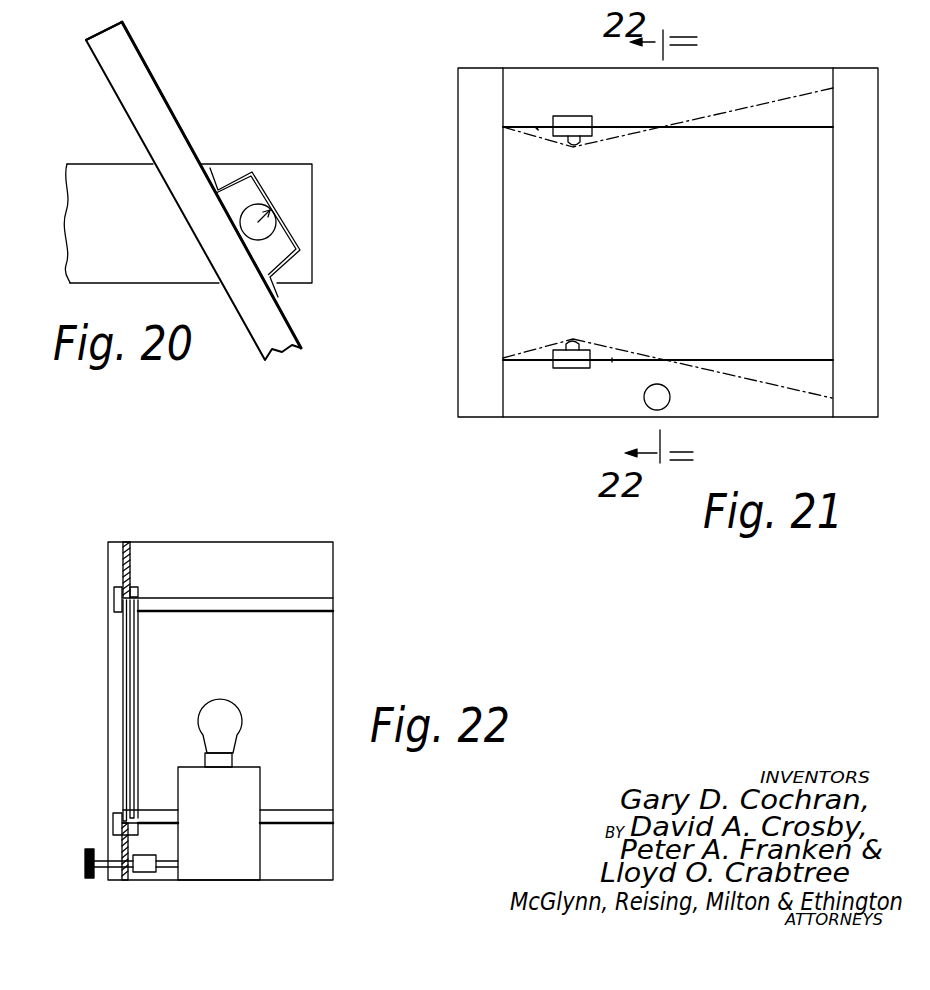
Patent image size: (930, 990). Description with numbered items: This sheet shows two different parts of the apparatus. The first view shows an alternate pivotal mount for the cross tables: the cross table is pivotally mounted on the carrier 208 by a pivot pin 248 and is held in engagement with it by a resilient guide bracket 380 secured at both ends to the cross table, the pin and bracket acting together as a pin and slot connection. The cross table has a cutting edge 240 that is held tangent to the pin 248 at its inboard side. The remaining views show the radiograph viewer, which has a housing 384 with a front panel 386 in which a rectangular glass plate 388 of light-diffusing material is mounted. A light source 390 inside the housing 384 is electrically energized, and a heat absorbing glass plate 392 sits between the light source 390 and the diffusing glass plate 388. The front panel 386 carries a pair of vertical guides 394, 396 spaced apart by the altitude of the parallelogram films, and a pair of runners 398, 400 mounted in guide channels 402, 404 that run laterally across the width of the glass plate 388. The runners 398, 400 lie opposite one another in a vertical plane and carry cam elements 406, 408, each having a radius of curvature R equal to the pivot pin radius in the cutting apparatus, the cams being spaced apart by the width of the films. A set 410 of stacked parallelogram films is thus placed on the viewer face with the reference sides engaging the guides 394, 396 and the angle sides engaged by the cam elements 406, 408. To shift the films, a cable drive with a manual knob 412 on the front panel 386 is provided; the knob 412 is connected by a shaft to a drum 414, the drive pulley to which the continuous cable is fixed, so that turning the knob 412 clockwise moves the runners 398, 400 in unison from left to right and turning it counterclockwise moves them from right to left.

In FIG. 20, the cutting edge 240 is at (175, 117).
In FIG. 20, the carrier 208 is at (78, 140).
In FIG. 20, the resilient guide bracket 380 is at (243, 178).
In FIG. 20, the pivot pin 248 is at (265, 218).
In FIG. 20, the radius of curvature R is at (299, 250).
In FIG. 21, the front panel 386 is at (705, 87).
In FIG. 21, the guide 394 is at (503, 79).
In FIG. 22, the guide 394 is at (108, 622).
In FIG. 21, the guide 396 is at (830, 78).
In FIG. 21, the runner 398 is at (577, 116).
In FIG. 21, the runner 400 is at (570, 368).
In FIG. 21, the guide channel 402 is at (537, 130).
In FIG. 21, the guide channel 404 is at (614, 356).
In FIG. 21, the cam element 406 is at (573, 147).
In FIG. 21, the cam element 408 is at (568, 338).
In FIG. 21, the set of parallelogram films 410 is at (768, 98).
In FIG. 21, the manual knob 412 is at (670, 402).
In FIG. 22, the manual knob 412 is at (85, 863).
In FIG. 22, the housing 384 is at (248, 542).
In FIG. 22, the glass plate 388 is at (123, 690).
In FIG. 22, the light source 390 is at (228, 713).
In FIG. 22, the heat absorbing glass plate 392 is at (138, 657).
In FIG. 22, the drum 414 is at (143, 870).